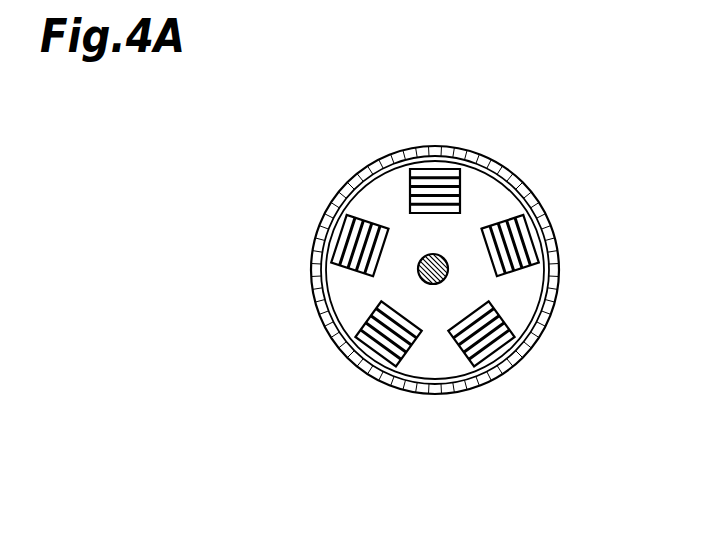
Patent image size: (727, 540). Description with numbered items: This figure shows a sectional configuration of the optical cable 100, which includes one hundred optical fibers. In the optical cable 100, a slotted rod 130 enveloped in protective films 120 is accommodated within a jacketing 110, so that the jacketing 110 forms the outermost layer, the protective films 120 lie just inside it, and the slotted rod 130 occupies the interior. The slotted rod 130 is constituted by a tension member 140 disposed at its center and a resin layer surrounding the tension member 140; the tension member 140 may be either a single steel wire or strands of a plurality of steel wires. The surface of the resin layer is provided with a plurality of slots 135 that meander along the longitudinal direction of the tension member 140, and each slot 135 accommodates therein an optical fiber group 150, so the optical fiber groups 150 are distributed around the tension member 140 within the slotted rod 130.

The optical cable 100 is at (509, 137).
The jacketing 110 is at (556, 203).
The protective films 120 is at (545, 275).
The slotted rod 130 is at (447, 368).
The slots 135 is at (405, 182).
The tension member 140 is at (418, 273).
The optical fiber group 150 is at (348, 228).